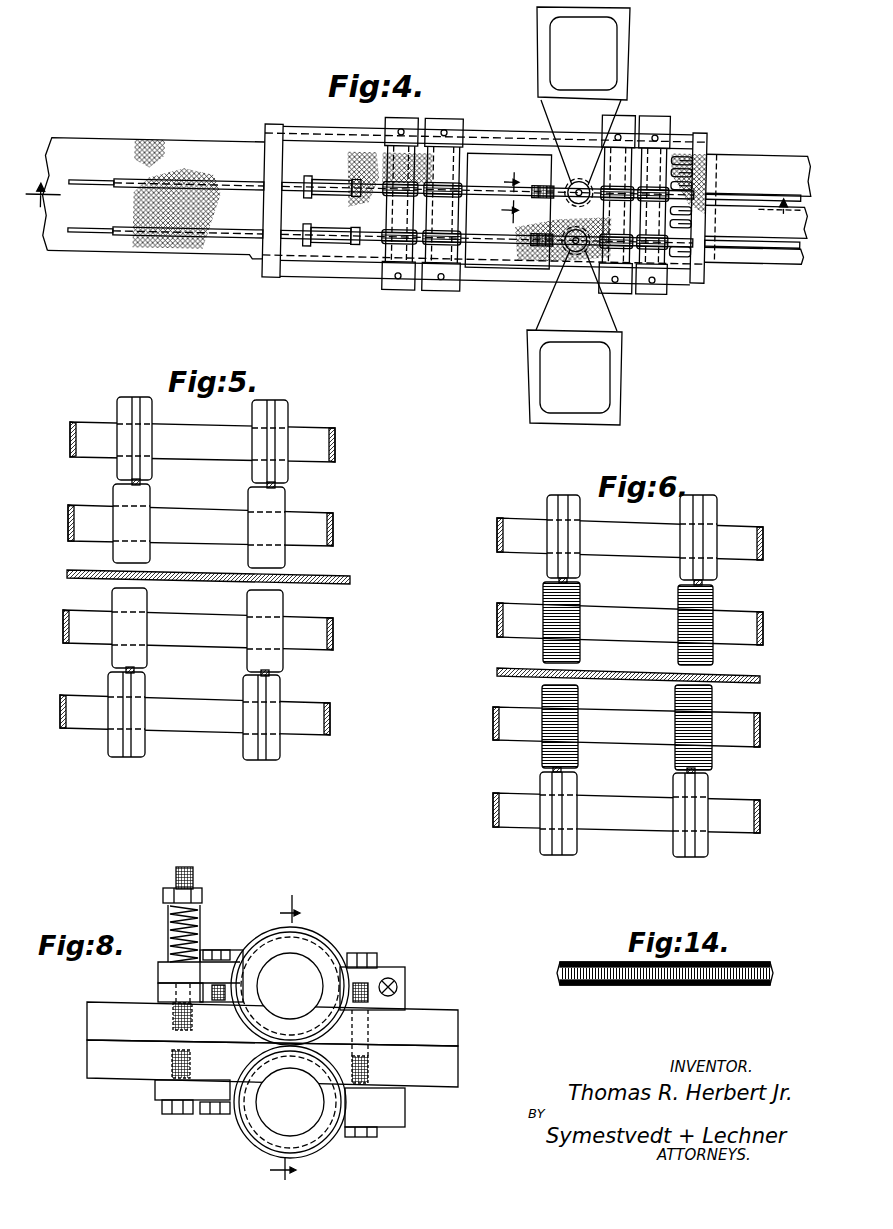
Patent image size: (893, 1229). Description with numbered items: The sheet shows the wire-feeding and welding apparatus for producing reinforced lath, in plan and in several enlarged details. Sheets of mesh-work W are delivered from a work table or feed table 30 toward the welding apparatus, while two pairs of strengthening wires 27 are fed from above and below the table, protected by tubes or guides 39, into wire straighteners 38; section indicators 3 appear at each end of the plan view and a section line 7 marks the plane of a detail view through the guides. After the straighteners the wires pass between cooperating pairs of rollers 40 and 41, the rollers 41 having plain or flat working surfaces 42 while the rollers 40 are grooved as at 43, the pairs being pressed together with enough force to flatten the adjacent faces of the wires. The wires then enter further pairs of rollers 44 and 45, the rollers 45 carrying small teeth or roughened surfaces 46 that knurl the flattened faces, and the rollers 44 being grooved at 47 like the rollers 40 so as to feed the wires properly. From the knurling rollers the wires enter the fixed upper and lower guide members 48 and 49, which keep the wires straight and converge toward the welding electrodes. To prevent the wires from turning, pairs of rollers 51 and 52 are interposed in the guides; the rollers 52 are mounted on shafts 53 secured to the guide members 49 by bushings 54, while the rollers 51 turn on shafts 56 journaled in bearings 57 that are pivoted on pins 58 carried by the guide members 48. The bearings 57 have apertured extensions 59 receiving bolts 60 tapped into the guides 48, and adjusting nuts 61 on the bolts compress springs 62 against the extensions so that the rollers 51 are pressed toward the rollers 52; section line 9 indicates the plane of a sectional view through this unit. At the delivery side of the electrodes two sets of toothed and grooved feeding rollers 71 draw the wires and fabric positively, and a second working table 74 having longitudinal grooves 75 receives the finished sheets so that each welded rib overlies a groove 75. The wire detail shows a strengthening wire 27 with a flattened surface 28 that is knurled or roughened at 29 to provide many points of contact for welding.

In FIG. 4, the web W is at (153, 145).
In FIG. 4, the section line of FIG. 3 is at (414, 208).
In FIG. 4, the section line 7— 7 is at (503, 198).
In FIG. 8, the section line 9— 9 is at (276, 1038).
In FIG. 4, the strengthening wires 27 is at (108, 190).
In FIG. 5, the strengthening wires 27 is at (140, 481).
In FIG. 14, the strengthening wires 27 is at (675, 986).
In FIG. 14, the flattened surfaces 28 is at (722, 966).
In FIG. 14, the knurled or roughened surfaces 29 is at (585, 968).
In FIG. 4, the work table 30 is at (215, 257).
In FIG. 4, the wire straighteners 38 is at (354, 248).
In FIG. 4, the tubes or guides 39 is at (253, 191).
In FIG. 4, the grooved rollers 40 is at (409, 279).
In FIG. 5, the grooved rollers 40 is at (117, 404).
In FIG. 5, the plain rollers 41 is at (113, 492).
In FIG. 5, the plain or flat working surfaces 42 is at (130, 570).
In FIG. 5, the grooves 43 is at (140, 397).
In FIG. 4, the grooved feed rollers 44 is at (447, 261).
In FIG. 6, the grooved feed rollers 44 is at (547, 500).
In FIG. 6, the knurling rollers 45 is at (543, 660).
In FIG. 6, the small teeth or roughened surfaces 46 is at (543, 600).
In FIG. 6, the grooves 47 is at (568, 495).
In FIG. 4, the upper guide members 48 is at (510, 245).
In FIG. 8, the upper guide members 48 is at (455, 1020).
In FIG. 8, the lower guide members 49 is at (450, 1075).
In FIG. 8, the grooved rollers 51 is at (300, 930).
In FIG. 8, the flat-surfaced rollers 52 is at (335, 1143).
In FIG. 8, the shafts 53 is at (290, 1102).
In FIG. 8, the bushings 54 is at (405, 1116).
In FIG. 8, the shafts 56 is at (290, 986).
In FIG. 8, the bearings 57 is at (318, 950).
In FIG. 8, the pins 58 is at (397, 982).
In FIG. 8, the apertured extensions 59 is at (158, 972).
In FIG. 8, the bolts 60 is at (160, 993).
In FIG. 8, the adjusting nuts 61 is at (185, 892).
In FIG. 8, the springs 62 is at (196, 920).
In FIG. 4, the feeding rollers 71 is at (625, 261).
In FIG. 4, the second working table 74 is at (763, 149).
In FIG. 4, the grooves or recesses 75 is at (717, 153).